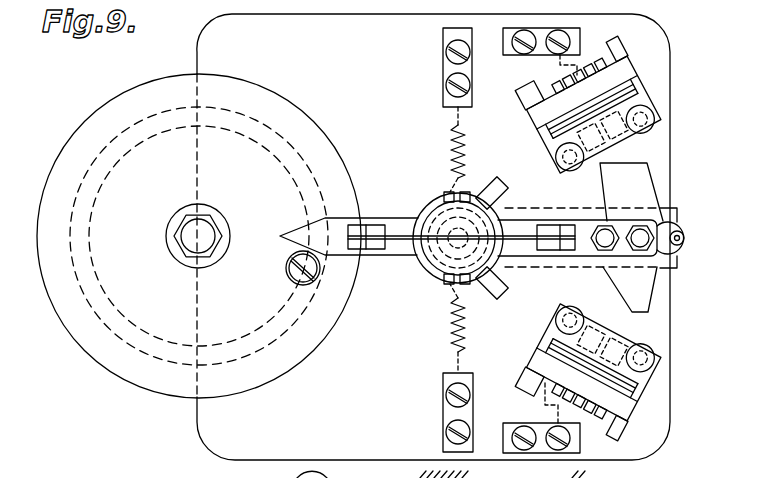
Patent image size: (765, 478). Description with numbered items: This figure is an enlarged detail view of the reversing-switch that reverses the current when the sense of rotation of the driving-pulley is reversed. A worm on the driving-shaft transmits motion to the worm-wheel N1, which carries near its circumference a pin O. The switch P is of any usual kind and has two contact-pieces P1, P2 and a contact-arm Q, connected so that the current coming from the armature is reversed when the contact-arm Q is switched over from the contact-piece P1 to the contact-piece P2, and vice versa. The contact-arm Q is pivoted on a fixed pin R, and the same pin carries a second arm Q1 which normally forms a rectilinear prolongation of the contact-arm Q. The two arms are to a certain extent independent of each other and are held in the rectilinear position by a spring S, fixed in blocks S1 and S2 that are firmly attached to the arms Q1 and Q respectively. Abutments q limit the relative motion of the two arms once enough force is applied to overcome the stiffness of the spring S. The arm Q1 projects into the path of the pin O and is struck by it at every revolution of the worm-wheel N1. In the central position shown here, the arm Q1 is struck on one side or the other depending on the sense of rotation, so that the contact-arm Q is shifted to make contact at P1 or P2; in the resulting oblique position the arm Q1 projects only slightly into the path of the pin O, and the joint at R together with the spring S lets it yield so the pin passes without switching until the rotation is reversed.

The worm-wheel N1 is at (128, 316).
The pin O is at (286, 264).
The switch P is at (429, 240).
The contact-piece P1 is at (558, 116).
The contact-piece P2 is at (553, 360).
The contact-arm Q is at (591, 237).
The second arm Q1 is at (398, 247).
The abutments q is at (462, 194).
The fixed pin R is at (464, 247).
The spring S is at (515, 238).
The block S1 is at (366, 233).
The block S2 is at (560, 247).